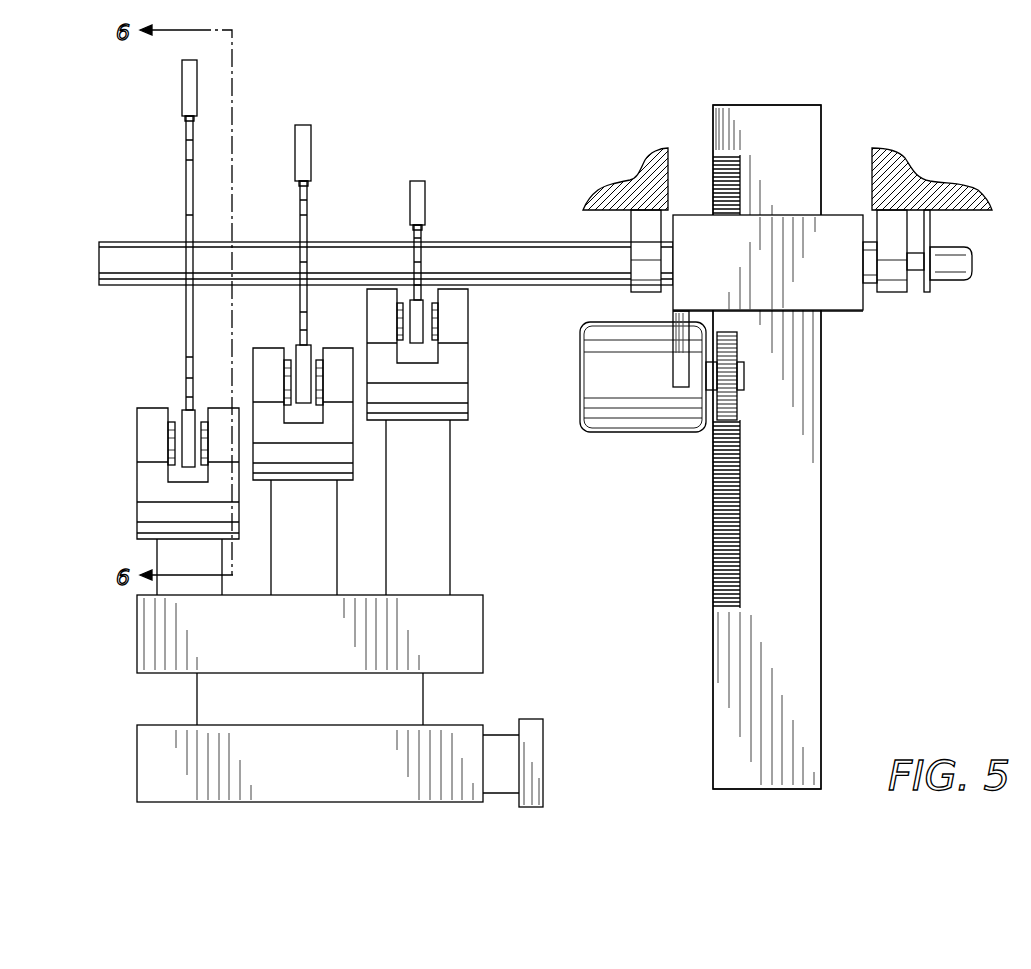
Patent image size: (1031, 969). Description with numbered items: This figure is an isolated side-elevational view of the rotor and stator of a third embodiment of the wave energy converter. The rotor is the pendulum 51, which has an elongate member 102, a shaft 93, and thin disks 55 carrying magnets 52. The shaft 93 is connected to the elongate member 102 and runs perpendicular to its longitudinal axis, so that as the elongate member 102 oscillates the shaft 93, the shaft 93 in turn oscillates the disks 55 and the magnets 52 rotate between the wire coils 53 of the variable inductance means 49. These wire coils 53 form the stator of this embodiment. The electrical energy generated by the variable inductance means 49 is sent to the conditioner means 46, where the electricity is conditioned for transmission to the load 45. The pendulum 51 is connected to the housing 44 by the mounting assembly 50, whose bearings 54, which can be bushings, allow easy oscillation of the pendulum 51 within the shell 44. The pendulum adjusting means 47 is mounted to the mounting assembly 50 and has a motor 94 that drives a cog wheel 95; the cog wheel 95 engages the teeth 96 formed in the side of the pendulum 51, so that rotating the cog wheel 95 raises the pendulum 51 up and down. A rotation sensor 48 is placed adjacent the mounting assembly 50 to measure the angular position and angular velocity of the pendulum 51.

The housing 44 is at (668, 150).
The load 45 is at (543, 750).
The conditioner means 46 is at (137, 760).
The pendulum adjusting means 47 is at (605, 432).
The rotation sensor 48 is at (945, 258).
The variable inductance means 49 is at (483, 628).
The mounting assembly 50 is at (847, 312).
The pendulum 51 is at (821, 505).
The magnets 52 is at (182, 87).
The wire coils 53 is at (137, 478).
The bearings 54 is at (640, 287).
The disks 55 is at (186, 172).
The shaft 93 is at (578, 243).
The motor 94 is at (672, 432).
The cog wheel 95 is at (737, 413).
The teeth 96 is at (713, 515).
The elongate member 102 is at (812, 610).